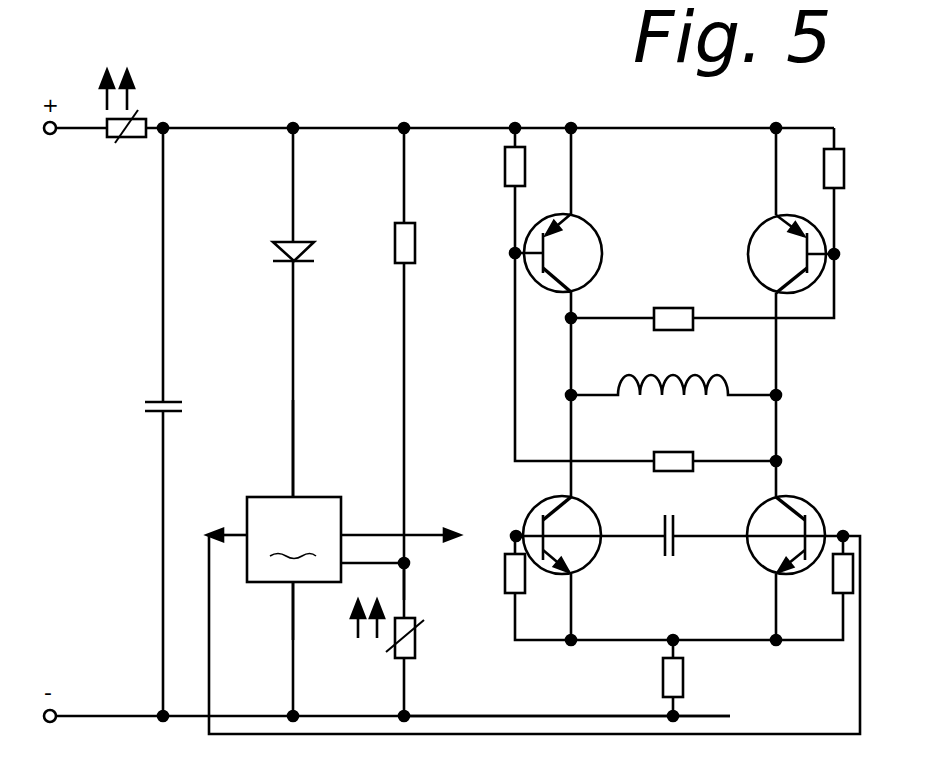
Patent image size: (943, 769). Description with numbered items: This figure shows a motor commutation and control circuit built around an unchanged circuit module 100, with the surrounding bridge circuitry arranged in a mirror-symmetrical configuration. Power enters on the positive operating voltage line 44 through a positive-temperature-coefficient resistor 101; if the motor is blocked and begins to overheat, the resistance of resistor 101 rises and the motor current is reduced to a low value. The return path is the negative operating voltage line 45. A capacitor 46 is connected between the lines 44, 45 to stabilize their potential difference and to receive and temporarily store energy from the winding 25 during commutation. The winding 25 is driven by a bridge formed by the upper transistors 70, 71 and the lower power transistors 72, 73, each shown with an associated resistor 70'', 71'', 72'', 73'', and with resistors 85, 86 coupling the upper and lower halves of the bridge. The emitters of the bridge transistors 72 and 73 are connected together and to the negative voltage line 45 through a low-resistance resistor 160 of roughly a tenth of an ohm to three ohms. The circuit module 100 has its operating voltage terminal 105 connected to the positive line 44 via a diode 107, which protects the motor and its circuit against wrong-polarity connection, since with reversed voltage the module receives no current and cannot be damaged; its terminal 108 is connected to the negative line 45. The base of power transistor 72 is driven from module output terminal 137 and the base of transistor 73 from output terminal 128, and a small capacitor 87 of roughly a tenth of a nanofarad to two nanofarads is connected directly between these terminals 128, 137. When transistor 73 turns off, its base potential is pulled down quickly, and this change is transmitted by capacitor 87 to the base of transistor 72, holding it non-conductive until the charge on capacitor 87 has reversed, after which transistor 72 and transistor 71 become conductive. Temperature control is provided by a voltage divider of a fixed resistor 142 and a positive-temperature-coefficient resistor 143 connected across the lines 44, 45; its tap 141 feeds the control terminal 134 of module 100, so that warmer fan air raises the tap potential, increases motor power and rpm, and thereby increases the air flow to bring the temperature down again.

The positive-temperature-coefficient resistor 101 is at (110, 138).
The positive operating voltage line 44 is at (462, 128).
The negative operating voltage line 45 is at (470, 716).
The capacitor 46 is at (170, 406).
The diode 107 is at (302, 243).
The fixed resistor 142 is at (415, 244).
The PTC resistor 143 is at (424, 620).
The transistor 70 is at (572, 241).
The resistor of transistor 70 70'' is at (537, 182).
The transistor 71 is at (783, 234).
The resistor of transistor 71 71'' is at (813, 179).
The power transistor 72 is at (571, 564).
The resistor of transistor 72 72'' is at (535, 588).
The power transistor 73 is at (771, 564).
The resistor of transistor 73 73'' is at (822, 588).
The resistor 85 is at (682, 330).
The resistor 86 is at (682, 471).
The capacitor 87 is at (666, 556).
The winding 25 is at (672, 397).
The low-resistance resistor 160 is at (684, 680).
The circuit module 100 is at (294, 539).
The operating voltage terminal 105 is at (296, 496).
The module terminal 108 is at (288, 584).
The output terminal 128 is at (246, 532).
The output terminal 137 is at (343, 536).
The control terminal 134 is at (343, 564).
The voltage divider tap 141 is at (410, 563).